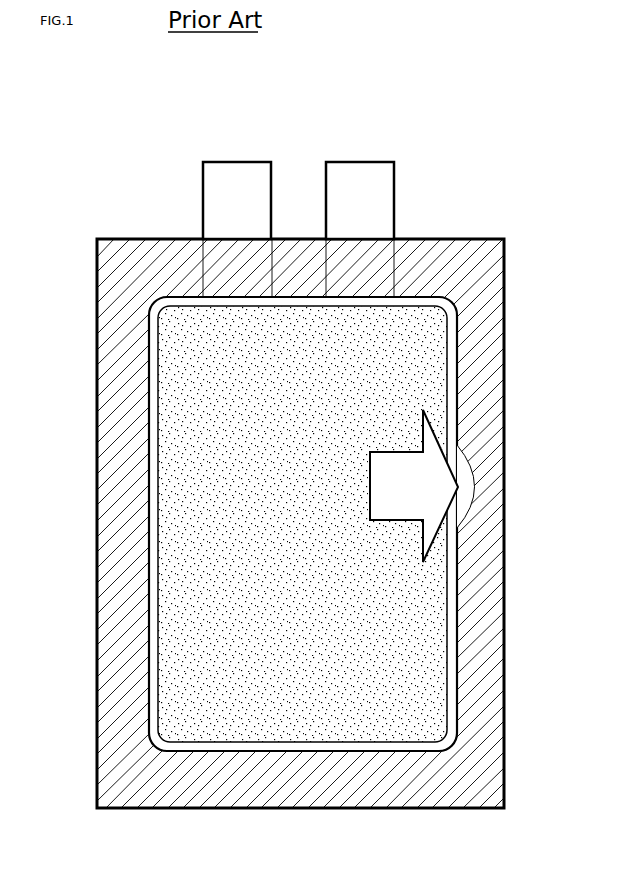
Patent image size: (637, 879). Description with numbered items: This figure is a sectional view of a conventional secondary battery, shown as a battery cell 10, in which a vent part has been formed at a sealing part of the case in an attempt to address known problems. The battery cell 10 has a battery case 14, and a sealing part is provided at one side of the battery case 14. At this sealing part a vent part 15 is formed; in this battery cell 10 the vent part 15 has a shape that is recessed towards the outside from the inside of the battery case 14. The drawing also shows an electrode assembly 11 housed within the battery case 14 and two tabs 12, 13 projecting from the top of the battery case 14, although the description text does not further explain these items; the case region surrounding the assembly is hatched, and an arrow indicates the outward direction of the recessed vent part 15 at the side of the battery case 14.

The battery cell 10 is at (100, 138).
The electrode assembly 11 is at (187, 438).
The positive electrode tab 12 is at (237, 173).
The negative electrode tab 13 is at (370, 190).
The battery case 14 is at (437, 253).
The vent part 15 is at (467, 480).